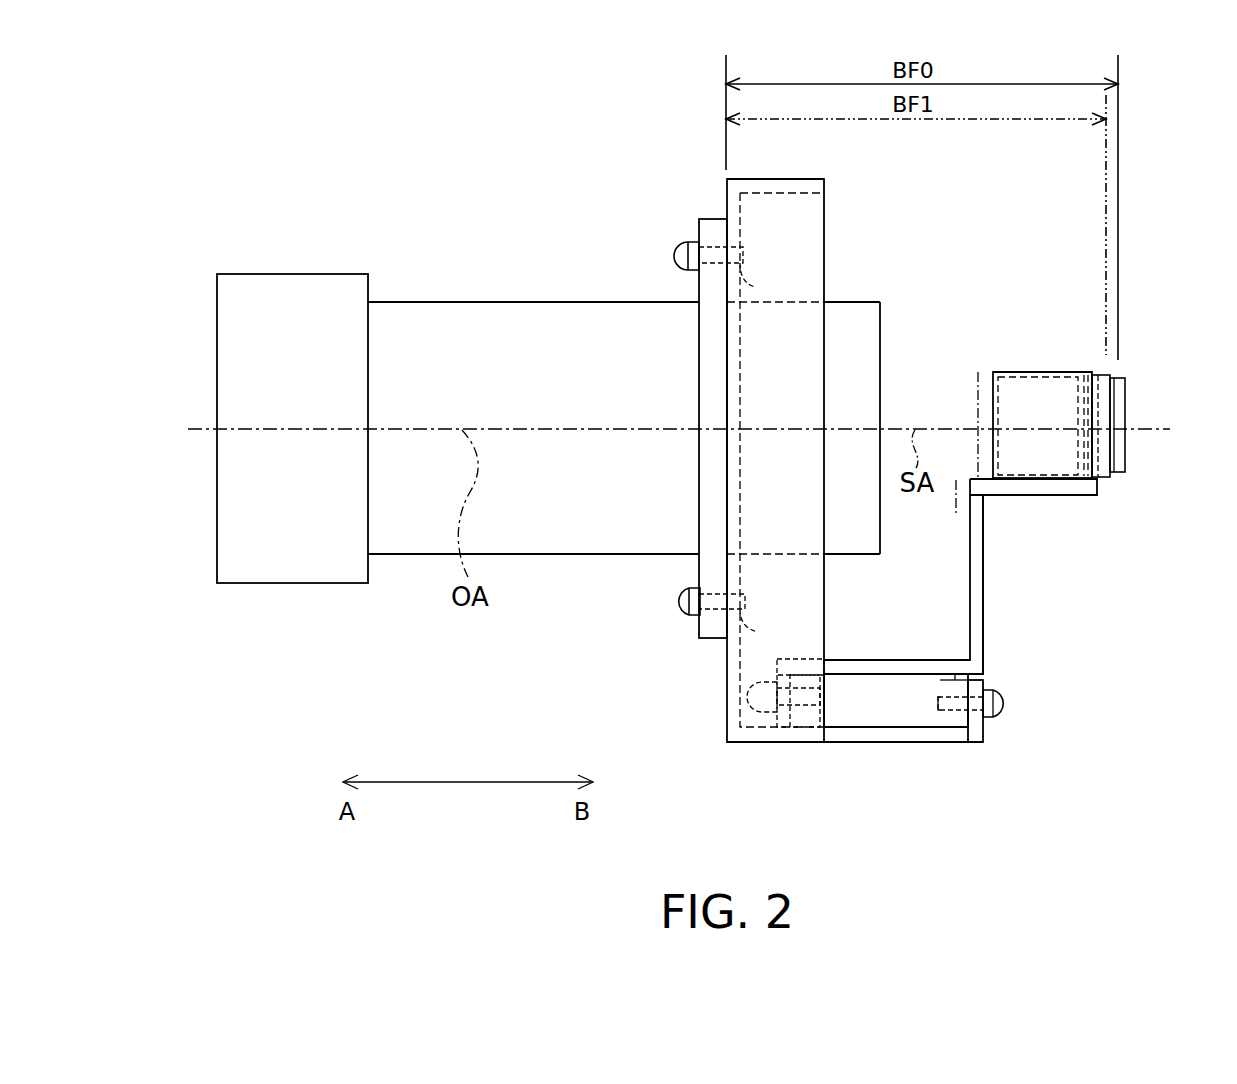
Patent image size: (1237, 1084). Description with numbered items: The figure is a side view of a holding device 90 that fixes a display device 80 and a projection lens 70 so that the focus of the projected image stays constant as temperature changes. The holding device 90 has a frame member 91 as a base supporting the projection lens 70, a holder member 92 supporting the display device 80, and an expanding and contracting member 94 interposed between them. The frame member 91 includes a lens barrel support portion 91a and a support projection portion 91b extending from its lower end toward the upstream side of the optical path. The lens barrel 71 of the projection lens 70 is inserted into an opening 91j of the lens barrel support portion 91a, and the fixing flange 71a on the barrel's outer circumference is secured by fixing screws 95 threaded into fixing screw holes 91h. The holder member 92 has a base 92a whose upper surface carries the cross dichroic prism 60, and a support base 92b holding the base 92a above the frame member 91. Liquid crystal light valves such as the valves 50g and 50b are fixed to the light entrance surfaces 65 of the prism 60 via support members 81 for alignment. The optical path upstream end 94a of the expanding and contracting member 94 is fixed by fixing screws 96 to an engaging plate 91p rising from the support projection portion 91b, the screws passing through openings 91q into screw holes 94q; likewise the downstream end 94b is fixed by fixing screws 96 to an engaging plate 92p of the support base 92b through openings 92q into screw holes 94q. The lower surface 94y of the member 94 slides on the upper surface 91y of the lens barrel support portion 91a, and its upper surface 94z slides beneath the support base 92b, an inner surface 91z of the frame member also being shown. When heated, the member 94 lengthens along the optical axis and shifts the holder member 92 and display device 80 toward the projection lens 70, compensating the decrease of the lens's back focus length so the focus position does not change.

The projection lens 70 is at (424, 252).
The lens barrel 71 is at (515, 300).
The fixing flange 71a is at (712, 218).
The display device 80 is at (1076, 328).
The support member 81 is at (1100, 478).
The cross dichroic prism 60 is at (1050, 370).
The light entrance surface 65 is at (1092, 447).
The liquid crystal light valve 50b is at (1020, 370).
The liquid crystal light valve 50g is at (1118, 363).
The holding device 90 is at (693, 754).
The frame member 91 is at (742, 758).
The lens barrel support portion 91a is at (779, 188).
The support projection portion 91b is at (905, 735).
The fixing screw hole 91h is at (742, 262).
The opening 91j is at (685, 240).
The engaging plate 91p is at (983, 730).
The opening 91q is at (995, 690).
The upper surface 91y is at (928, 725).
The inner side surface 91z is at (955, 675).
The holder member 92 is at (1026, 582).
The base 92a is at (1065, 488).
The support base 92b is at (985, 627).
The engaging plate 92p is at (790, 745).
The opening 92q is at (765, 698).
The expanding and contracting member 94 is at (890, 682).
The optical path upstream end 94a is at (955, 718).
The optical path downstream end 94b is at (800, 676).
The screw hole 94q is at (936, 698).
The lower surface 94y is at (868, 728).
The upper surface 94z is at (857, 672).
The fixing screw 95 is at (682, 262).
The fixing screw 96 is at (1005, 705).